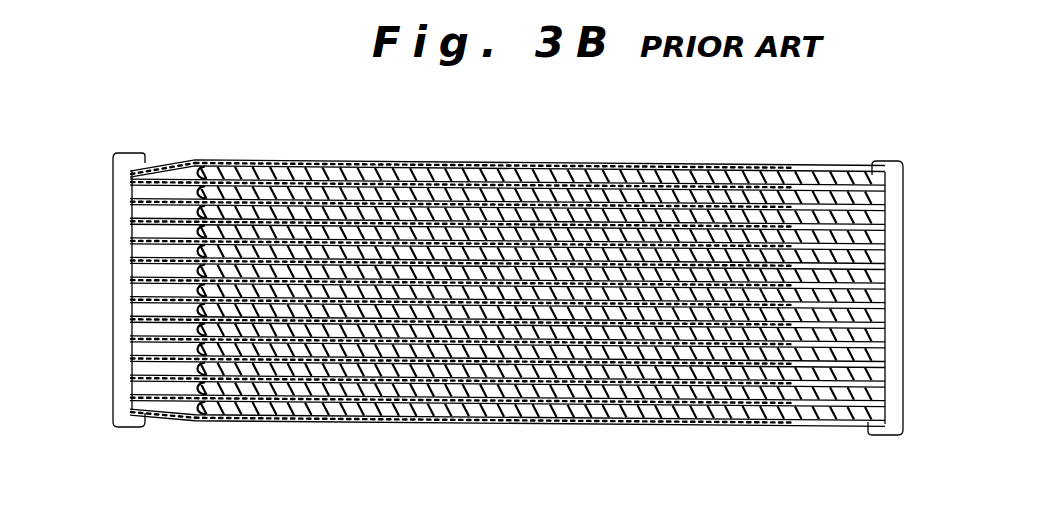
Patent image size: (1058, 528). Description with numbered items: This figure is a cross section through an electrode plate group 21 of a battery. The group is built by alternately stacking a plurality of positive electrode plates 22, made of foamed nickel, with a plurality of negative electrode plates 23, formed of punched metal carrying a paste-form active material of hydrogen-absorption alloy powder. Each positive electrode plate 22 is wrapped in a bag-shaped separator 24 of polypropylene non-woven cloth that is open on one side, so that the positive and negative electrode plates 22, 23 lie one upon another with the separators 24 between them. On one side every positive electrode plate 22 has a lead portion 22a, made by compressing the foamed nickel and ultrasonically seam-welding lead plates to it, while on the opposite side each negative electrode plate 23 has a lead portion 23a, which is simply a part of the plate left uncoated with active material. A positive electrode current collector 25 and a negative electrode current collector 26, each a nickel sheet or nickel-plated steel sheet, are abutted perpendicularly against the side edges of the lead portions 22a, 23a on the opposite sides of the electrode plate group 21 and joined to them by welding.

The electrode plate group 21 is at (492, 294).
The positive electrode plate 22 is at (570, 392).
The positive electrode lead portion 22a is at (851, 375).
The negative electrode plate 23 is at (352, 398).
The negative electrode lead portion 23a is at (143, 375).
The separator 24 is at (470, 397).
The positive electrode current collector 25 is at (894, 296).
The negative electrode current collector 26 is at (121, 230).